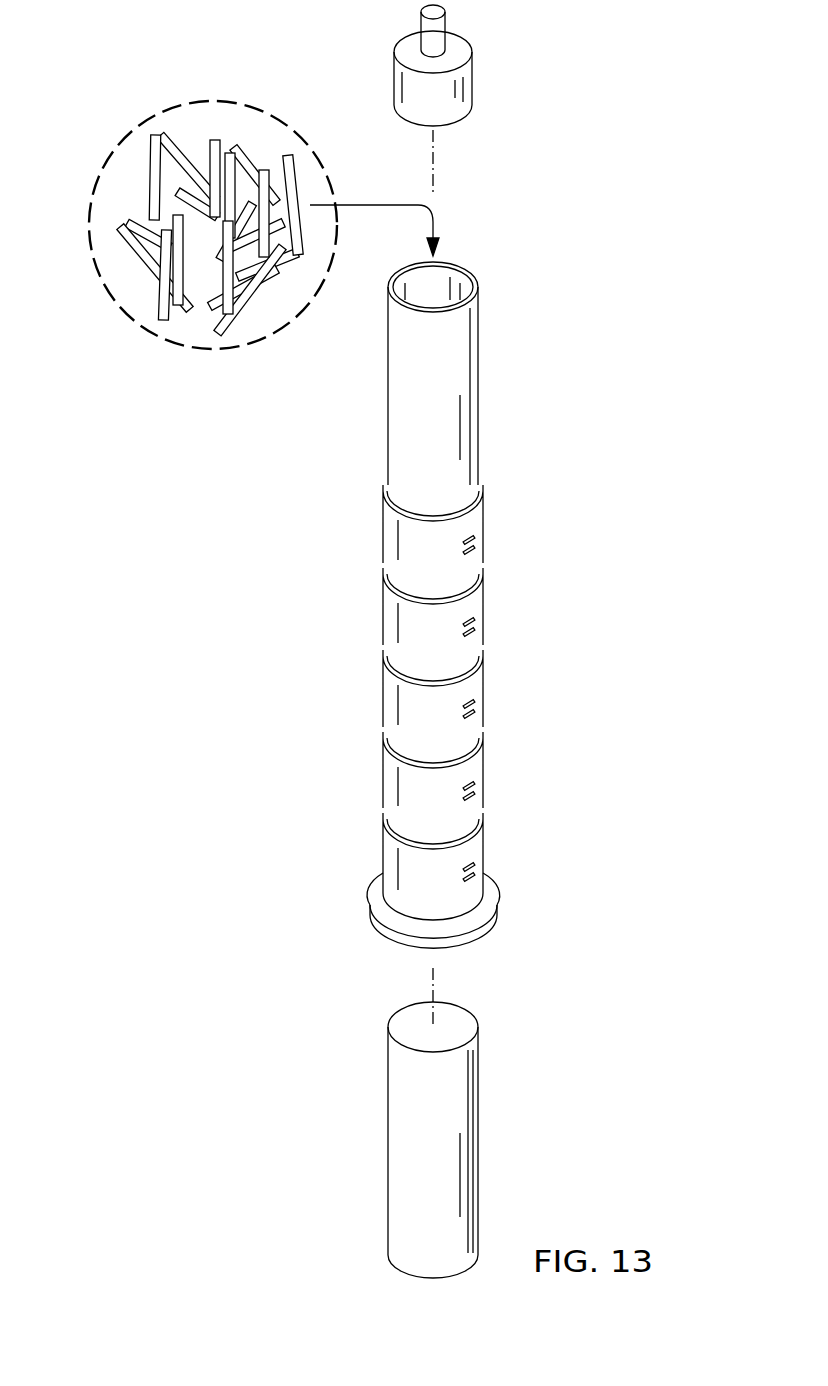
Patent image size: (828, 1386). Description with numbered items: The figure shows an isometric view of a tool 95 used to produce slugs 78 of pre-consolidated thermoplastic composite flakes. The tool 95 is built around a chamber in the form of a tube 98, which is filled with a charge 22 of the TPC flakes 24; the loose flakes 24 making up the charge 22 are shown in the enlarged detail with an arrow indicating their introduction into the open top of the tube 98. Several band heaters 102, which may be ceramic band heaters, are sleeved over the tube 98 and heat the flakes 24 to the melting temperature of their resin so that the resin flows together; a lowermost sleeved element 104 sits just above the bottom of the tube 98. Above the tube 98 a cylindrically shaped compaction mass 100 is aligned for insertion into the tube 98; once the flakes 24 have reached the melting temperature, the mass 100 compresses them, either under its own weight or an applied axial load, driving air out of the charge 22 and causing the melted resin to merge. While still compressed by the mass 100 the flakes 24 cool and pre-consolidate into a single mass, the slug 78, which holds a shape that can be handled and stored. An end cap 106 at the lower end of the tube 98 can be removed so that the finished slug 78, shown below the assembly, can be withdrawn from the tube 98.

The charge 22 is at (152, 108).
The TPC flakes 24 is at (150, 163).
The slug 78 is at (388, 1140).
The tool 95 is at (630, 481).
The tube 98 is at (480, 392).
The compaction mass 100 is at (475, 90).
The band heaters 102 is at (388, 535).
The end ring segment 104 is at (388, 865).
The end cap 106 is at (483, 947).